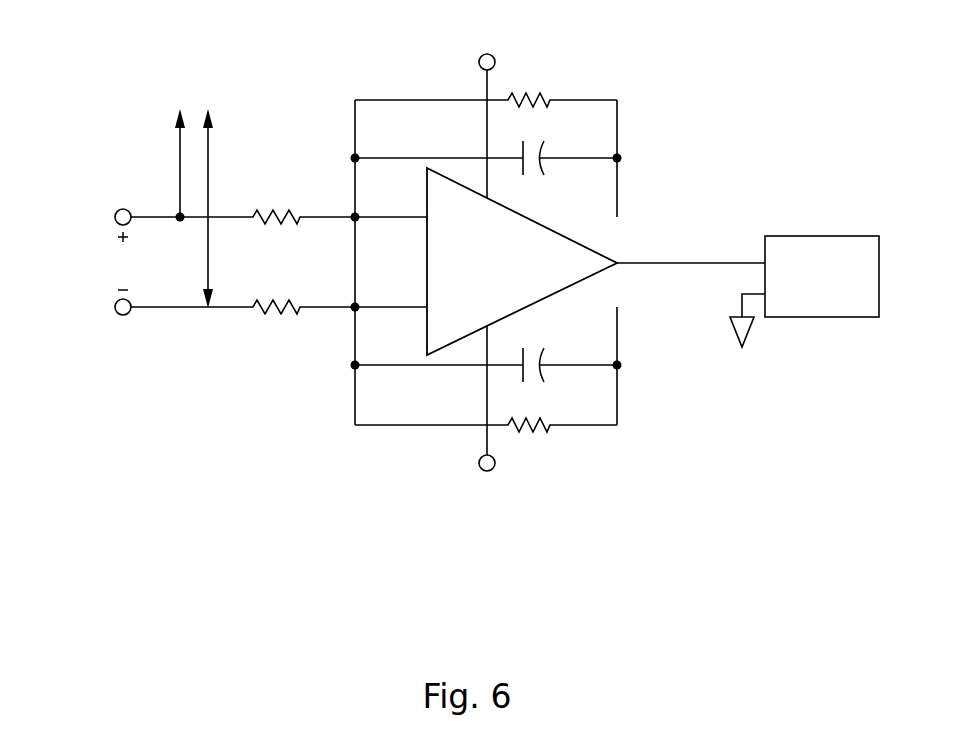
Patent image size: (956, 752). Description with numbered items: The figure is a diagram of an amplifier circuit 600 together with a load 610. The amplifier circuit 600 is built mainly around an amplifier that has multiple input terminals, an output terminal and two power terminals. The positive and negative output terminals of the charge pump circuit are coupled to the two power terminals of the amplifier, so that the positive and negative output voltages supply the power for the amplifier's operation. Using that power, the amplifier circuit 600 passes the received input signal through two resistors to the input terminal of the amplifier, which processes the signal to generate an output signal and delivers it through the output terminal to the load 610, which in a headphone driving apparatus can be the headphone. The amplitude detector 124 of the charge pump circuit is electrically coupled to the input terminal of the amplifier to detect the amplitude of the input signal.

The amplifier circuit 600 is at (448, 264).
The amplitude detector 124 is at (172, 102).
The load 610 is at (792, 235).